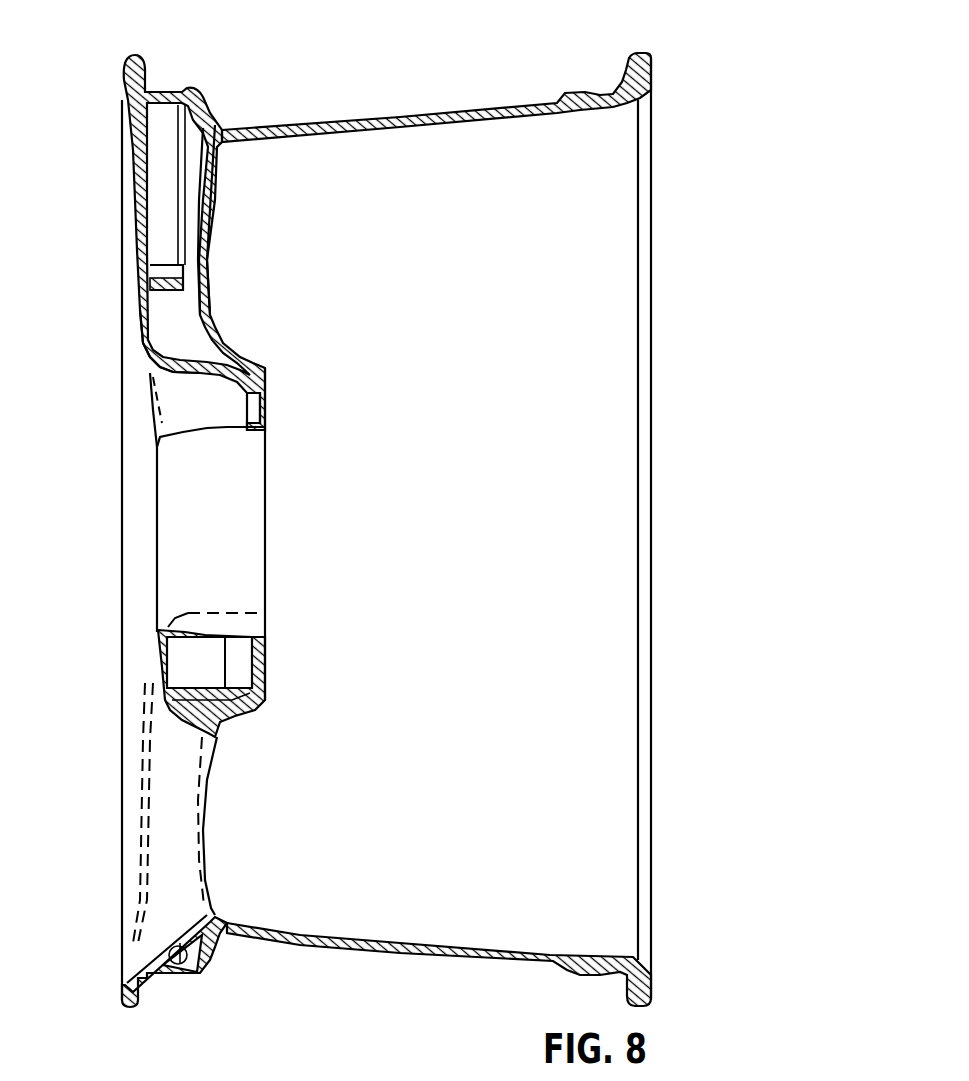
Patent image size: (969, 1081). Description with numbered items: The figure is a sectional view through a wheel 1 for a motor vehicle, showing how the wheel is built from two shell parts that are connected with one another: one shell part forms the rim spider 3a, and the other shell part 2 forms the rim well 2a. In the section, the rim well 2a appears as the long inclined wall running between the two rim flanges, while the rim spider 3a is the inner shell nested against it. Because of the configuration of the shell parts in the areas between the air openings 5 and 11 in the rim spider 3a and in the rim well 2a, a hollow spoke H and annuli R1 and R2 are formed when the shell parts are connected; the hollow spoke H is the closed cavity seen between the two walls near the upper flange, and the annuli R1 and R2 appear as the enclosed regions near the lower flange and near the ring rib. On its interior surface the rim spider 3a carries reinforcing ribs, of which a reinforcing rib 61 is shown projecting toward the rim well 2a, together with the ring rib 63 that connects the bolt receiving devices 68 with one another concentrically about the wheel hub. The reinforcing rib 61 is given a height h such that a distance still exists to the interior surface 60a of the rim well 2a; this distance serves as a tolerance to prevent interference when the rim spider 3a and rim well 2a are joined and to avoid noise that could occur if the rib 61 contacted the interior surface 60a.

The wheel 1 is at (693, 101).
The shell part 2 is at (330, 127).
The rim well 2a is at (450, 86).
The rim spider 3a is at (123, 149).
The interior surface of the rim well 60a is at (200, 174).
The hollow spoke H is at (160, 207).
The height of reinforcing rib h is at (168, 260).
The reinforcing rib 61 is at (153, 303).
The bolt receiving device 68 is at (237, 365).
The annulus R2 is at (200, 640).
The ring rib 63 is at (213, 692).
The air opening 11 is at (210, 817).
The air opening 5 is at (140, 857).
The annulus R1 is at (200, 973).